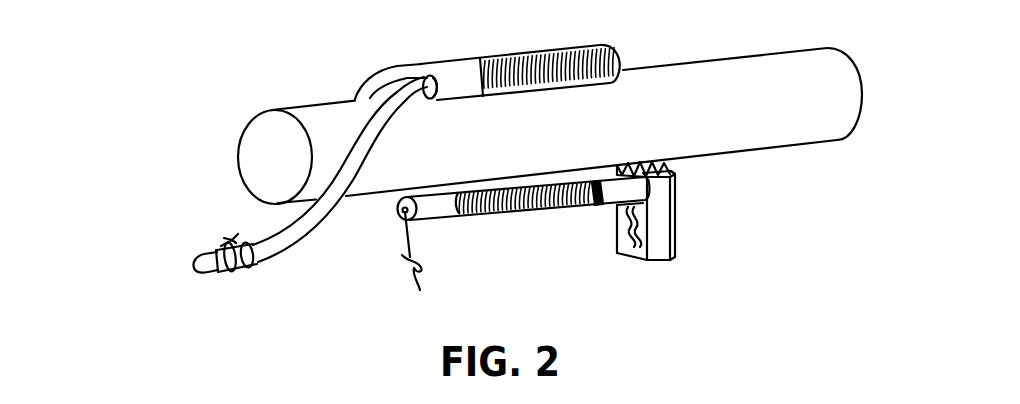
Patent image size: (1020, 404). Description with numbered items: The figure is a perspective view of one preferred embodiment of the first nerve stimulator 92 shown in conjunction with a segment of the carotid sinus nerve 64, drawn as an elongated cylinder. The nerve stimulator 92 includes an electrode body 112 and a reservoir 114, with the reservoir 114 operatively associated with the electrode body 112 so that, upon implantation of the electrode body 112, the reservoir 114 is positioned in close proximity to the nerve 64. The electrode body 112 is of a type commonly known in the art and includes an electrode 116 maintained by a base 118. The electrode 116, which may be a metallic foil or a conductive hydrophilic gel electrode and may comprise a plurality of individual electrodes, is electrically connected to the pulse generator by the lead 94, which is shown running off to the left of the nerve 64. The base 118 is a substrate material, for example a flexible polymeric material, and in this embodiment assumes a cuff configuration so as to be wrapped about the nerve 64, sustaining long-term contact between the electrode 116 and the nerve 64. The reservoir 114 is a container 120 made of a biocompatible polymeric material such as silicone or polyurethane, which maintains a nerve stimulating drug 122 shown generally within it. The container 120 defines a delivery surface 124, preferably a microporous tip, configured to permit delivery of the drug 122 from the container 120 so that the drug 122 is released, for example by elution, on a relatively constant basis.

The carotid sinus nerve 64 is at (762, 64).
The first nerve stimulator 92 is at (557, 243).
The lead 94 is at (267, 252).
The electrode body 112 is at (356, 78).
The reservoir 114 is at (536, 242).
The electrode 116 is at (527, 70).
The base 118 is at (414, 196).
The container 120 is at (676, 226).
The nerve stimulating drug 122 is at (617, 256).
The delivery surface 124 is at (676, 172).